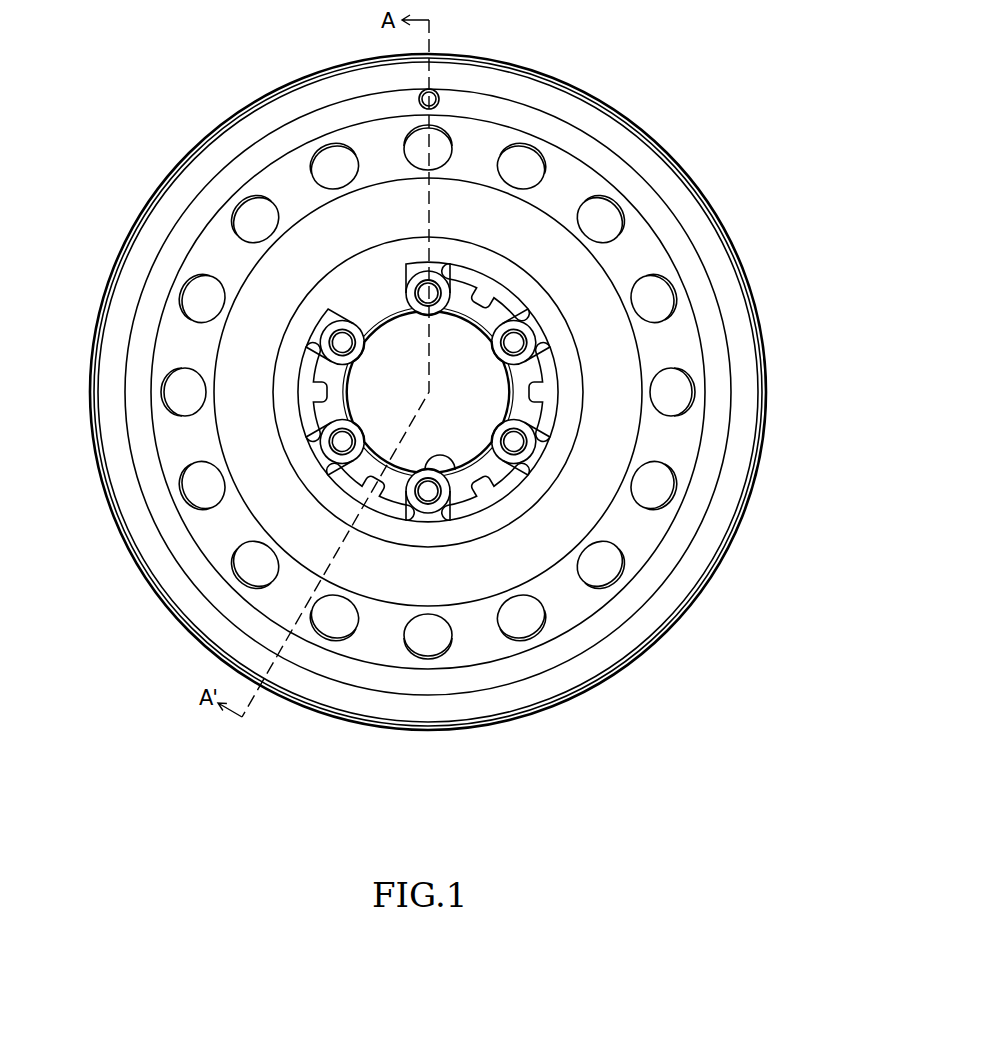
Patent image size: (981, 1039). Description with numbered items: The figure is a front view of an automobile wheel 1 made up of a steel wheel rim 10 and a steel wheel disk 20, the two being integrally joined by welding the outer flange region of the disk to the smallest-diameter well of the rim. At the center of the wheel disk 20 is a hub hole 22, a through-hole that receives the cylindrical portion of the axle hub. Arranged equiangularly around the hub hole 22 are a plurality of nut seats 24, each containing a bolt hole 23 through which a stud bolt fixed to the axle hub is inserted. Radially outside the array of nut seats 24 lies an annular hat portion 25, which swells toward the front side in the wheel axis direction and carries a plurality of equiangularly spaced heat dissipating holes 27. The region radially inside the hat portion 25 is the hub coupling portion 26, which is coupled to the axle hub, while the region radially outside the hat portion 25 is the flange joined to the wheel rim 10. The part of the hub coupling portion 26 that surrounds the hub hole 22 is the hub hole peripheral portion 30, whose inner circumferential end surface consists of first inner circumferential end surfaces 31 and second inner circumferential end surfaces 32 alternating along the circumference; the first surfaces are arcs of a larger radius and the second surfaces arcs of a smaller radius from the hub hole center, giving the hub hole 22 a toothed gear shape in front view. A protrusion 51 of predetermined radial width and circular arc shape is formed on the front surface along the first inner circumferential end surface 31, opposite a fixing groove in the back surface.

The automobile wheel 1 is at (571, 39).
The wheel rim 10 is at (508, 64).
The wheel disk 20 is at (582, 157).
The hub hole 22 is at (377, 384).
The bolt hole 23 is at (340, 448).
The nut seat 24 is at (407, 498).
The hat portion 25 is at (535, 570).
The hub coupling portion 26 is at (505, 472).
The heat dissipating hole 27 is at (440, 650).
The hub hole peripheral portion 30 is at (513, 348).
The first inner circumferential end surface 31 is at (507, 425).
The second inner circumferential end surface 32 is at (460, 497).
The protrusion 51 is at (298, 409).